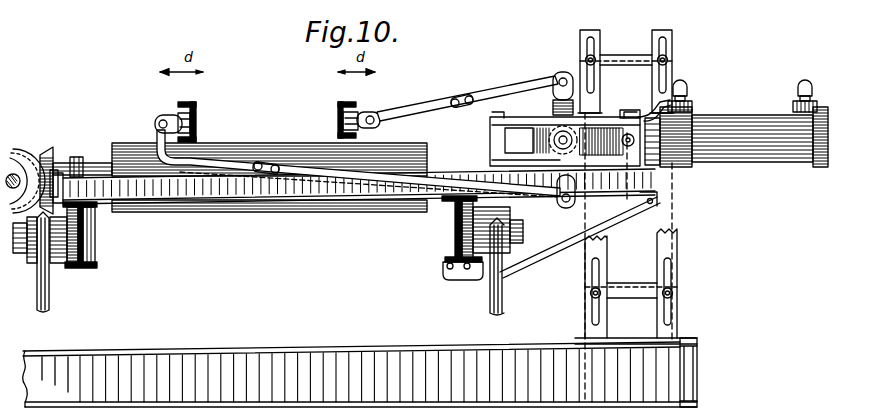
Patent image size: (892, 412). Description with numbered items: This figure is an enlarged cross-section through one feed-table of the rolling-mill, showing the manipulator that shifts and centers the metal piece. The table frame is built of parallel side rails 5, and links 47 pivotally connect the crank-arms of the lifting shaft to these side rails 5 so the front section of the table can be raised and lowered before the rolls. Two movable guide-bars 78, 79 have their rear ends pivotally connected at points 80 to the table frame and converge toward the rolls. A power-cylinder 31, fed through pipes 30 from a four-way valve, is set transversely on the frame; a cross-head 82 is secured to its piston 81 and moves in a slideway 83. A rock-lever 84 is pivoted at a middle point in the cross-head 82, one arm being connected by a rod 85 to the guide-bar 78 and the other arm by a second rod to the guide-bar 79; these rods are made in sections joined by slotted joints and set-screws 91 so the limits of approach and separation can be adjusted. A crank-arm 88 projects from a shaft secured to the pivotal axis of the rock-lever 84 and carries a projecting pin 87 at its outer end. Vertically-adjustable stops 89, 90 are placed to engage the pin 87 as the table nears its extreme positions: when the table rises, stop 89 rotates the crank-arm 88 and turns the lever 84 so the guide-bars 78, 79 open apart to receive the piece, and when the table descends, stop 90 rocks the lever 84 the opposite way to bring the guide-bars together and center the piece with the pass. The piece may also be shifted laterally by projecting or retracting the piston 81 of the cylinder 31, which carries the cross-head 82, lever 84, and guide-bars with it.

The side rails 5 is at (85, 242).
The pipes 30 is at (684, 95).
The power-cylinder 31 is at (745, 118).
The links 47 is at (38, 290).
The movable guide-bar 78 is at (175, 112).
The movable guide-bar 79 is at (344, 111).
The pivot points 80 is at (505, 93).
The piston 81 is at (591, 140).
The cross-head 82 is at (533, 140).
The slideway 83 is at (581, 256).
The rock-lever 84 is at (551, 204).
The rod 85 is at (374, 180).
The projecting pin 87 is at (640, 125).
The crank-arm 88 is at (617, 125).
The vertically-adjustable stop 89 is at (626, 57).
The vertically-adjustable stop 90 is at (637, 299).
The set-screws 91 is at (458, 98).